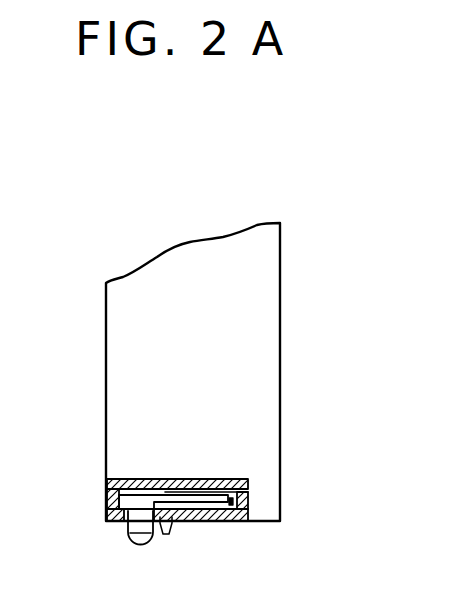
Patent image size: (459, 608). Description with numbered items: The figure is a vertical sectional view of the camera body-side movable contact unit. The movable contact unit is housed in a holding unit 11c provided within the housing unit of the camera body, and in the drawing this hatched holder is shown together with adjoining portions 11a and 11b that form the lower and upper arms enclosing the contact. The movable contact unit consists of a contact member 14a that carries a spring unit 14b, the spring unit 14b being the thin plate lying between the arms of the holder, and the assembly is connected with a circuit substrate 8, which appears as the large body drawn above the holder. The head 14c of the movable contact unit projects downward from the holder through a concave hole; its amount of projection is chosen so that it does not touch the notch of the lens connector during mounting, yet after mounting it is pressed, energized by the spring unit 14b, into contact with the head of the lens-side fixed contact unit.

The circuit substrate 8 is at (163, 480).
The lower arm of holder 11a is at (190, 522).
The upper arm of holder 11b is at (110, 493).
The holding unit 11c is at (108, 506).
The contact member 14a is at (130, 530).
The spring unit 14b is at (226, 479).
The head 14c is at (140, 545).